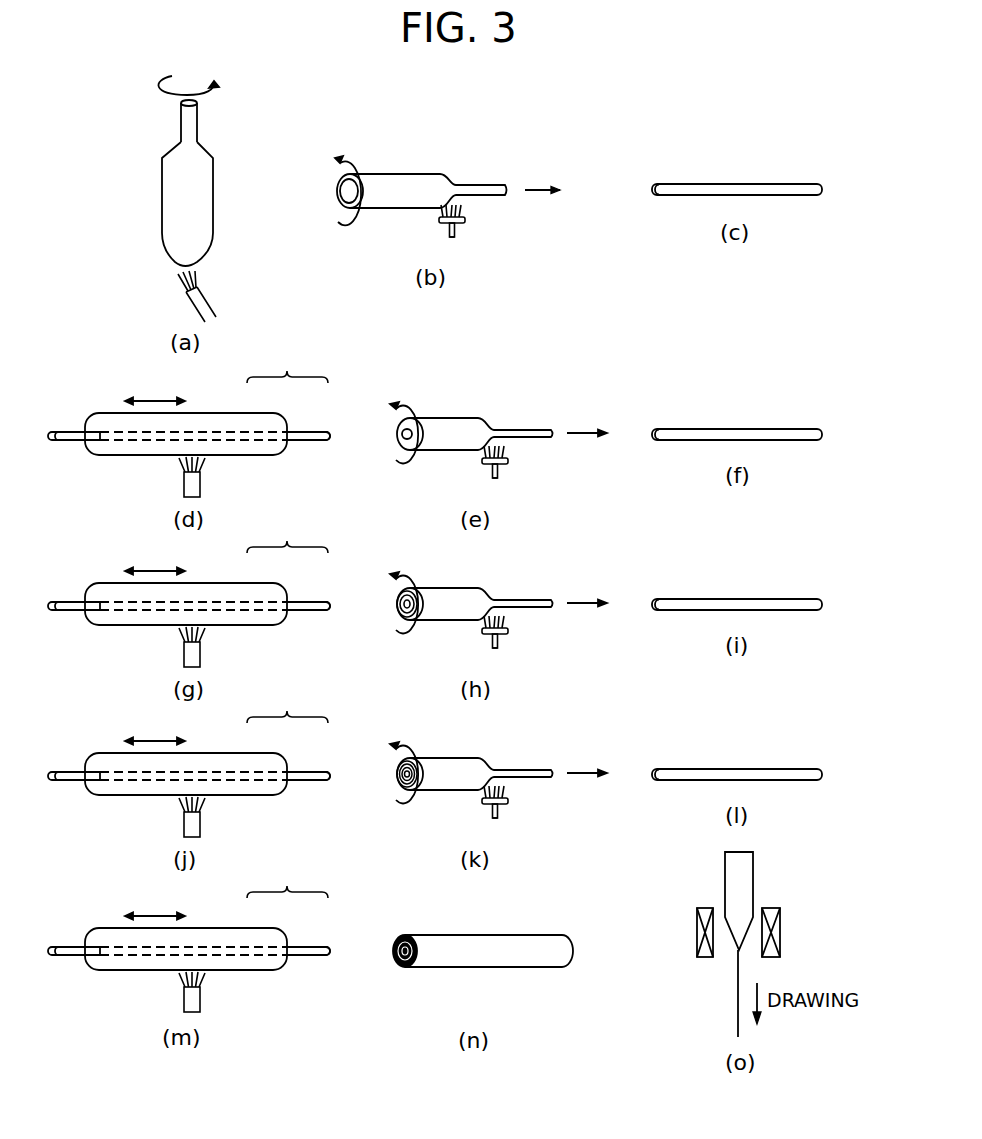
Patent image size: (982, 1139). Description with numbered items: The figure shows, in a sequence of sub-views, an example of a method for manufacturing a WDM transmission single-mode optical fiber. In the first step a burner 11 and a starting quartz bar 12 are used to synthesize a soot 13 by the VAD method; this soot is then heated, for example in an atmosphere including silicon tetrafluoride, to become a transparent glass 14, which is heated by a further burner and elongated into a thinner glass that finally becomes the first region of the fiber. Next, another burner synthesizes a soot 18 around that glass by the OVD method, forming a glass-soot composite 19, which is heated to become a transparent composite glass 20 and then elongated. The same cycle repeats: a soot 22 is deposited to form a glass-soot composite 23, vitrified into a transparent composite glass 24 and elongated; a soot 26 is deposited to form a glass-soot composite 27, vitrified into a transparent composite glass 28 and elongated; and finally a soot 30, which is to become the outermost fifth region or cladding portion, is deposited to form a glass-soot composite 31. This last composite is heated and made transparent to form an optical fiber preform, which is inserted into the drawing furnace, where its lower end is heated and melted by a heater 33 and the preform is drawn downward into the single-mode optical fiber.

The burner 11 is at (207, 300).
The starting quartz bar 12 is at (194, 125).
The soot 13 is at (208, 207).
The transparent glass 14 is at (410, 183).
The soot 18 is at (260, 413).
The glass-soot composite 19 is at (287, 365).
The transparent composite glass 20 is at (454, 425).
The soot 22 is at (189, 588).
The glass-soot composite 23 is at (287, 535).
The transparent composite glass 24 is at (498, 591).
The soot 26 is at (189, 758).
The glass-soot composite 27 is at (287, 705).
The transparent composite glass 28 is at (498, 761).
The soot 30 is at (189, 933).
The glass-soot composite 31 is at (287, 880).
The heater 33 is at (780, 930).